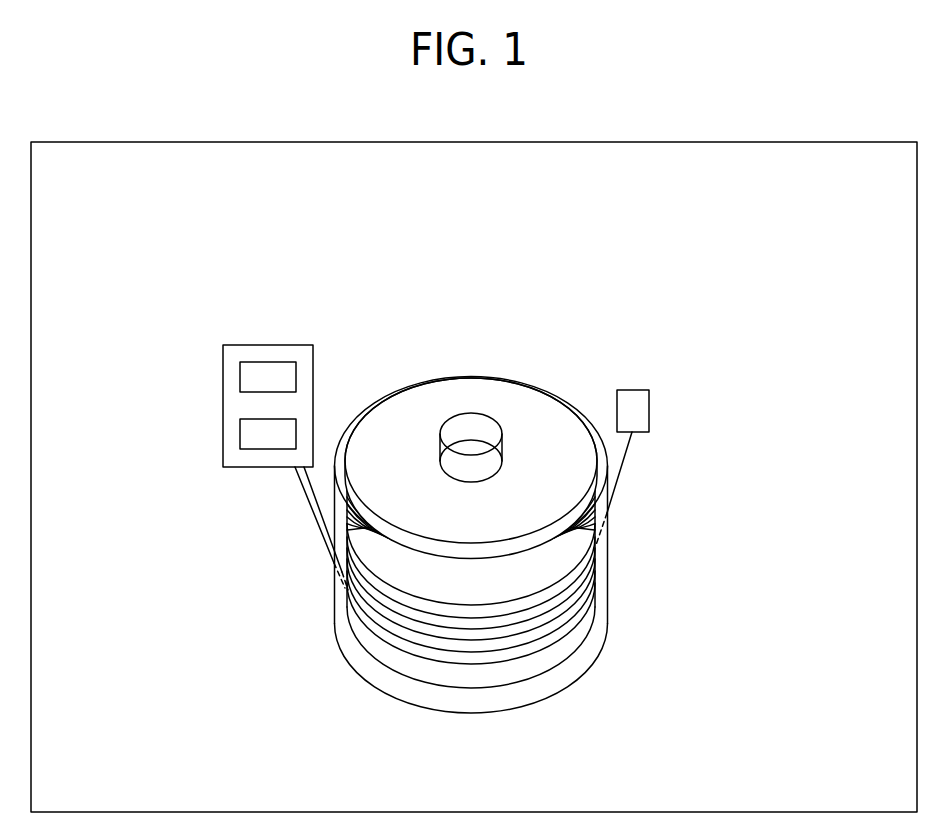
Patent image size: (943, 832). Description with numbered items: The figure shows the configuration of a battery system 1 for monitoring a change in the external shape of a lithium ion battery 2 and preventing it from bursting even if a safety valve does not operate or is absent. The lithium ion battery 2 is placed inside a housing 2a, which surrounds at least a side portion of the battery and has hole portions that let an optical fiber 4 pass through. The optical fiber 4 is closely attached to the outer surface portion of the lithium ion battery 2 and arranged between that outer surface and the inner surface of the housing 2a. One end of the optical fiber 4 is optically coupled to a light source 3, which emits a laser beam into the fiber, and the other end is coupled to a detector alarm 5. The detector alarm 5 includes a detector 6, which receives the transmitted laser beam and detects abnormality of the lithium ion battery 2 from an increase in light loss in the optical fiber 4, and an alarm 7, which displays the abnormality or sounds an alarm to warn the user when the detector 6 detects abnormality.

The battery system 1 is at (579, 242).
The lithium ion battery 2 is at (483, 378).
The housing 2a is at (607, 577).
The light source 3 is at (649, 408).
The optical fiber 4 is at (438, 665).
The detector alarm 5 is at (313, 372).
The detector 6 is at (240, 378).
The alarm 7 is at (240, 445).